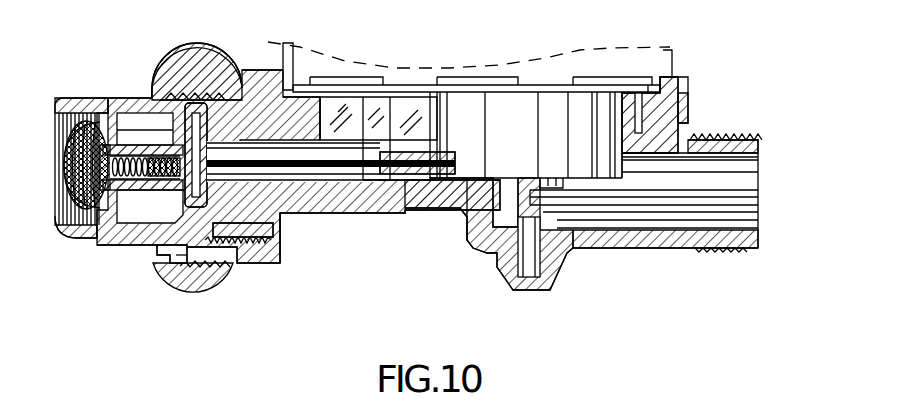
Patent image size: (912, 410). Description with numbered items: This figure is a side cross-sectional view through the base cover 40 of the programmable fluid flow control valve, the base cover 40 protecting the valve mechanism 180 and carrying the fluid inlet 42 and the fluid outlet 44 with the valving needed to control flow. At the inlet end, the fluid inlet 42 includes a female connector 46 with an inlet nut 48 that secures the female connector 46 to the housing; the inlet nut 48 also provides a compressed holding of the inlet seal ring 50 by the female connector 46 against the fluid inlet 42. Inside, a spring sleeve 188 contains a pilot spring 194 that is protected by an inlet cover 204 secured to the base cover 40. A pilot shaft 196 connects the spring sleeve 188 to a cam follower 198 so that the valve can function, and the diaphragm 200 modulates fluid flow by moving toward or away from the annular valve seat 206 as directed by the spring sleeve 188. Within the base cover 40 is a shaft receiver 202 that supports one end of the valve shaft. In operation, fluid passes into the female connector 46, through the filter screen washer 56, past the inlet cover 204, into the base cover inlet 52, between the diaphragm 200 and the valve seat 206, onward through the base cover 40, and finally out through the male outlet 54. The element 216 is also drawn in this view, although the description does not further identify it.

The base cover 40 is at (638, 243).
The fluid inlet 42 is at (47, 163).
The fluid outlet 44 is at (777, 195).
The female connector 46 is at (80, 98).
The inlet nut 48 is at (197, 287).
The inlet seal ring 50 is at (181, 266).
The base cover inlet 52 is at (238, 77).
The male outlet 54 is at (722, 134).
The filter screen washer 56 is at (98, 228).
The valve mechanism 180 is at (40, 332).
The spring sleeve 188 is at (150, 152).
The pilot spring 194 is at (132, 175).
The pilot shaft 196 is at (356, 162).
The cam follower 198 is at (414, 175).
The diaphragm 200 is at (230, 193).
The shaft receiver 202 is at (512, 250).
The inlet cover 204 is at (133, 152).
The annular valve seat 206 is at (287, 228).
The flange 216 is at (281, 238).